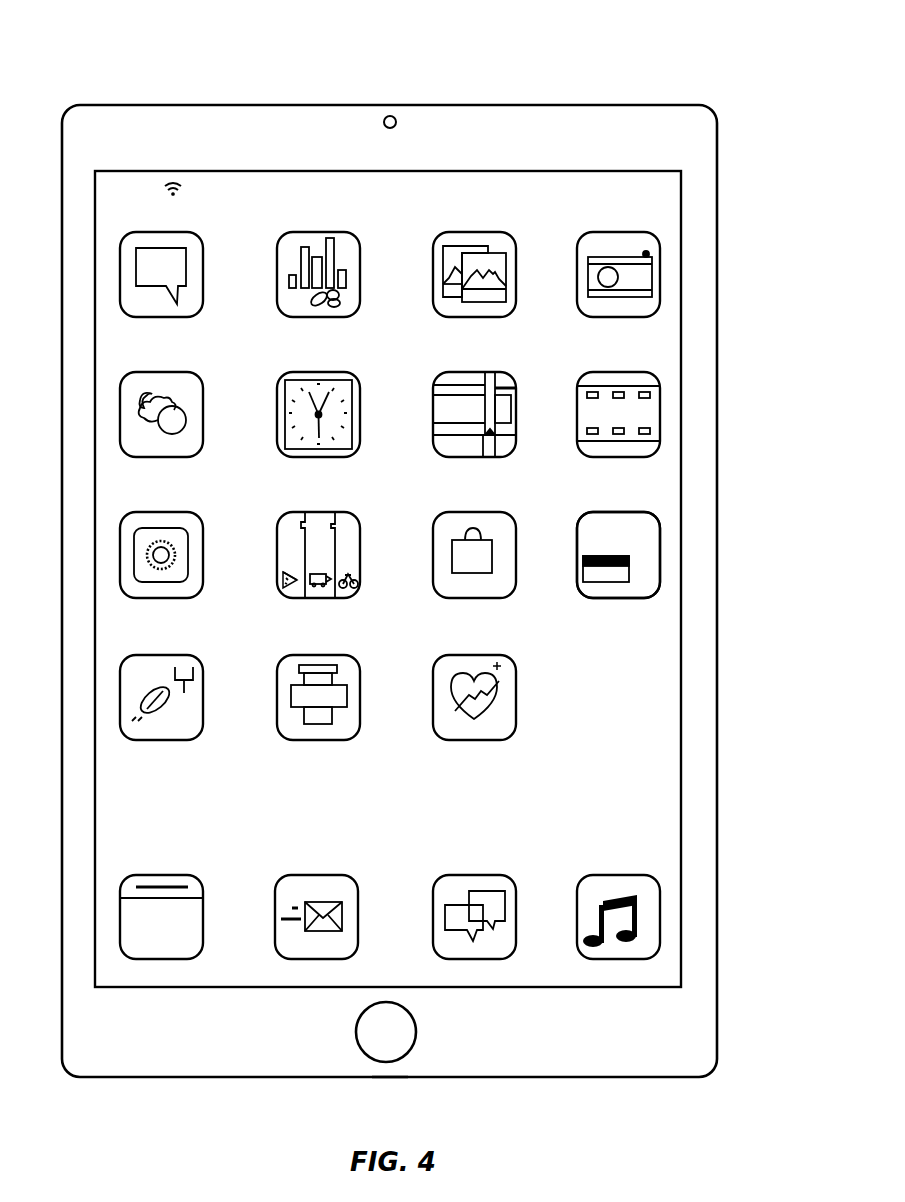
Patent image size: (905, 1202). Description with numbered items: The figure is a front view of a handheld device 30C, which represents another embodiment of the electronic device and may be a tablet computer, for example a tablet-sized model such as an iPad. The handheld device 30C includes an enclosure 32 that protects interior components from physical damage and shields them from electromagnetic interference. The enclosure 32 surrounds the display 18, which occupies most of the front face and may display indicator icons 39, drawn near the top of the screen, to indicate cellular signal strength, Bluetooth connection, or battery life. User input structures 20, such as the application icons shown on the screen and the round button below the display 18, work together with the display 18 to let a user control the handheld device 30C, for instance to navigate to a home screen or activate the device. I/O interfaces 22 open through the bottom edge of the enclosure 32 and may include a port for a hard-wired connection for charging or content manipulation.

The handheld device 30C is at (77, 62).
The enclosure 32 is at (638, 104).
The display 18 is at (682, 659).
The user input structures 20 is at (661, 557).
The I/O interfaces 22 is at (390, 1079).
The indicator icons 39 is at (174, 186).